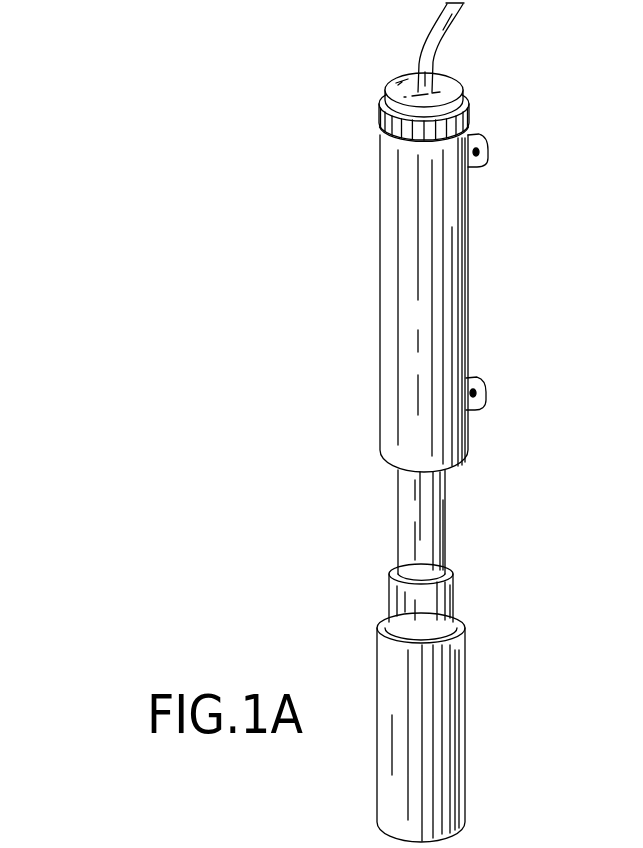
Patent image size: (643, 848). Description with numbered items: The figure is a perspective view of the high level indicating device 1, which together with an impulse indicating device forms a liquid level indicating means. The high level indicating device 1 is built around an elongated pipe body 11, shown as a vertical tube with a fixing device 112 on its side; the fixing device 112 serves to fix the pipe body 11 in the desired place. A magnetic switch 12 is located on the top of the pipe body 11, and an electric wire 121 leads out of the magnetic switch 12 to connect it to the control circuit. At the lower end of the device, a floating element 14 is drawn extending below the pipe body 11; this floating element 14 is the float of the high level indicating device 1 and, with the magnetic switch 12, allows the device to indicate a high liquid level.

The high level indicating device 1 is at (315, 284).
The pipe body 11 is at (380, 391).
The magnetic switch 12 is at (400, 96).
The electric wire 121 is at (460, 26).
The fixing device 112 is at (487, 152).
The floating element 14 is at (377, 663).